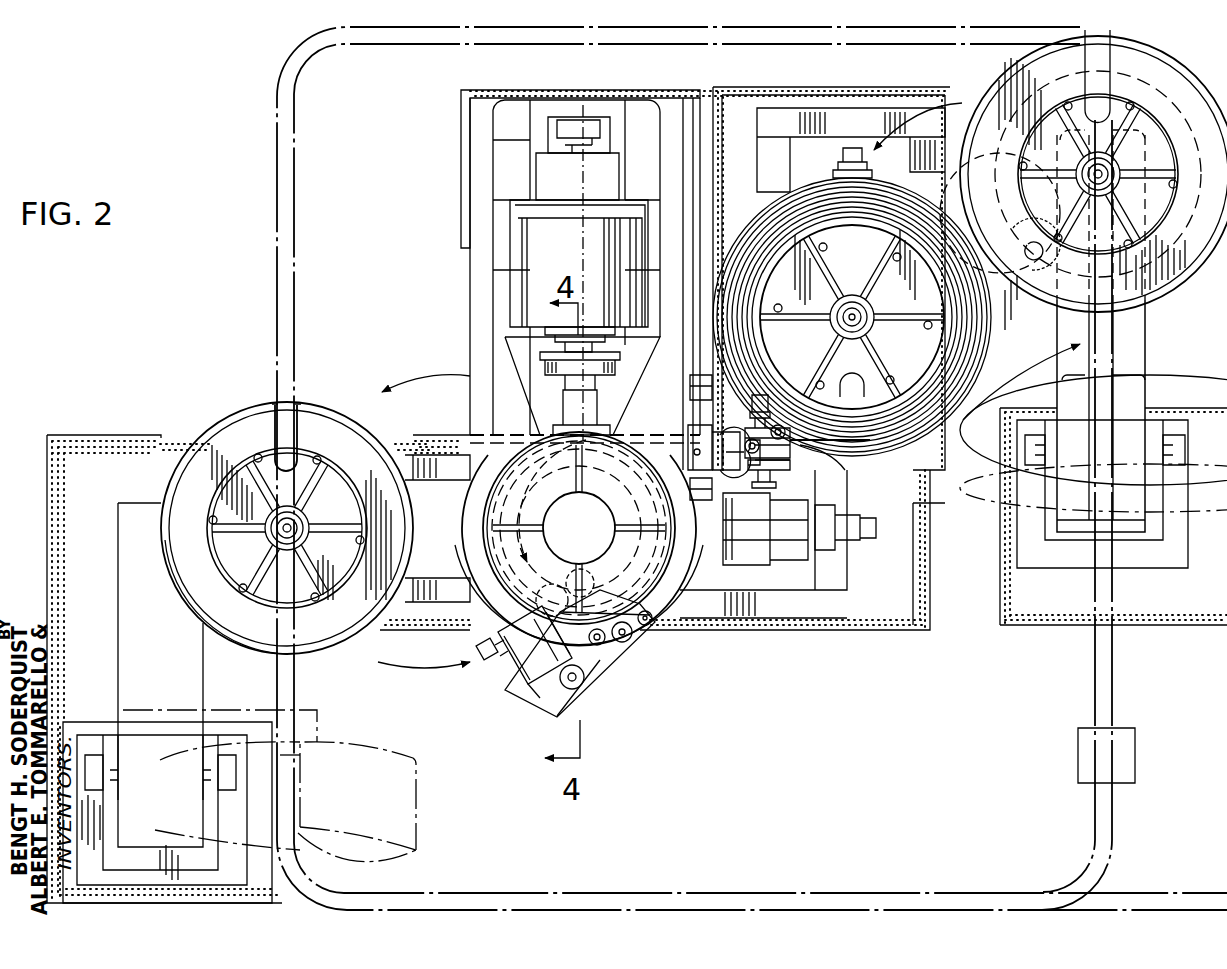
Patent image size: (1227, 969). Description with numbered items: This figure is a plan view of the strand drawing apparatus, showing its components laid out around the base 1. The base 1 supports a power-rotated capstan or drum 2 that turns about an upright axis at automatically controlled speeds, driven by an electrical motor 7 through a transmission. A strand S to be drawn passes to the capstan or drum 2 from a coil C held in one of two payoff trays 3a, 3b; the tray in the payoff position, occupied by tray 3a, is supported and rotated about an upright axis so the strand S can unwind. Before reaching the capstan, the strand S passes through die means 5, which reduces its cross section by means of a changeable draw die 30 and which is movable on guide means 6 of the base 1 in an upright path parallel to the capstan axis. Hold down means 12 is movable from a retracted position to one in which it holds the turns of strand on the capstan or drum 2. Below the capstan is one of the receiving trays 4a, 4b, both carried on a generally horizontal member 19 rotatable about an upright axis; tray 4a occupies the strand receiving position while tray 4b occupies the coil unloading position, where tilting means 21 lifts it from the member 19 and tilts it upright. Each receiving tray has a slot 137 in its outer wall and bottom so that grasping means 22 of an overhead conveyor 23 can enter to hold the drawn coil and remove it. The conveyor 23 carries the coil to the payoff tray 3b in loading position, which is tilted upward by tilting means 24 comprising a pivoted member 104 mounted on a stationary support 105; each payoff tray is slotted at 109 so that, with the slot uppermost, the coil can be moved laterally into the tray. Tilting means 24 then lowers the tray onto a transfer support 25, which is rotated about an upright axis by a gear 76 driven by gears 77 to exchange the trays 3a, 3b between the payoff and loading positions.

The base 1 is at (468, 276).
The capstan or drum 2 is at (520, 470).
The payoff tray 3a is at (785, 198).
The payoff tray 3b is at (1150, 280).
The receiving tray 4a is at (688, 605).
The receiving tray 4b is at (186, 605).
The die means 5 is at (777, 462).
The guide means 6 is at (700, 377).
The electrical motor 7 is at (537, 306).
The hold down means 12 is at (622, 670).
The rotatable member 19 is at (413, 590).
The tilting means 21 is at (114, 670).
The grasping means of overhead conveyor 22 is at (1136, 758).
The overhead conveyor 23 is at (672, 894).
The tilting means 24 is at (1150, 362).
The transfer support 25 is at (958, 175).
The draw die 30 is at (693, 428).
The gear 76 is at (980, 195).
The gears 77 is at (1045, 262).
The pivoted member 104 is at (1146, 334).
The stationary support 105 is at (1150, 563).
The slot 109 is at (1110, 50).
The slot 137 is at (282, 398).
The strand S is at (800, 445).
The coil C is at (913, 422).